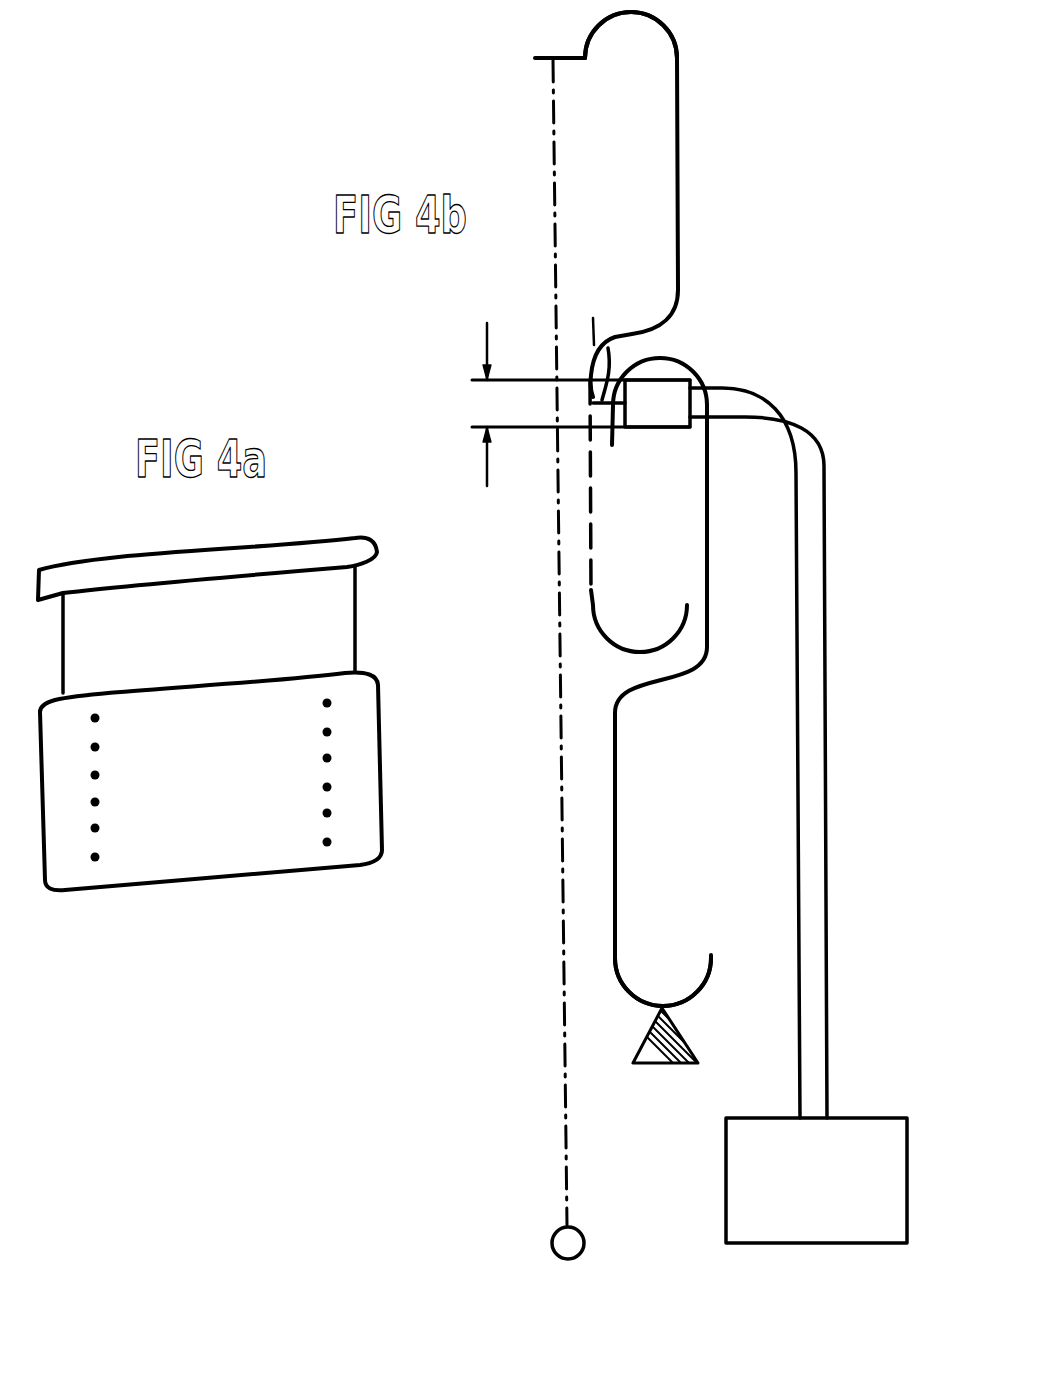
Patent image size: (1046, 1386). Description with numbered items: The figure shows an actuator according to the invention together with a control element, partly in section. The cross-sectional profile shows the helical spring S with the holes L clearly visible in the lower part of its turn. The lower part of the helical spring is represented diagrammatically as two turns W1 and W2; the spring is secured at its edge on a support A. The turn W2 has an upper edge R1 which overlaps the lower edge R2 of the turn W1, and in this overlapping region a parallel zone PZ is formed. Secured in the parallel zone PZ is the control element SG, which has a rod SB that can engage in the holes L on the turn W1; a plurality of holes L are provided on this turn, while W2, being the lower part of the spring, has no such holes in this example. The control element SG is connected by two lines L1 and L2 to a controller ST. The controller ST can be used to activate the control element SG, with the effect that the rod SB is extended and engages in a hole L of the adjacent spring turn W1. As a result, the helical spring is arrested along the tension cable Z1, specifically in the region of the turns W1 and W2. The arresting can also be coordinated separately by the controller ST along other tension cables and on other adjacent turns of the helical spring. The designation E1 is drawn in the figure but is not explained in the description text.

In FIG. 4b, the upper edge R1 is at (677, 32).
In FIG. 4b, the turn W1 is at (680, 163).
In FIG. 4b, the first plane E1 is at (540, 60).
In FIG. 4b, the rod SB is at (592, 314).
In FIG. 4b, the parallel zone PZ is at (581, 404).
In FIG. 4b, the control element SG is at (651, 415).
In FIG. 4b, the holes L is at (590, 585).
In FIG. 4a, the holes L is at (332, 813).
In FIG. 4b, the lower edge R2 is at (620, 648).
In FIG. 4b, the line L1 is at (796, 744).
In FIG. 4b, the line L2 is at (825, 807).
In FIG. 4b, the turn W2 is at (616, 828).
In FIG. 4b, the support A is at (660, 1065).
In FIG. 4b, the tension cable Z1 is at (565, 1105).
In FIG. 4b, the controller ST is at (746, 1209).
In FIG. 4a, the helical spring S is at (383, 767).